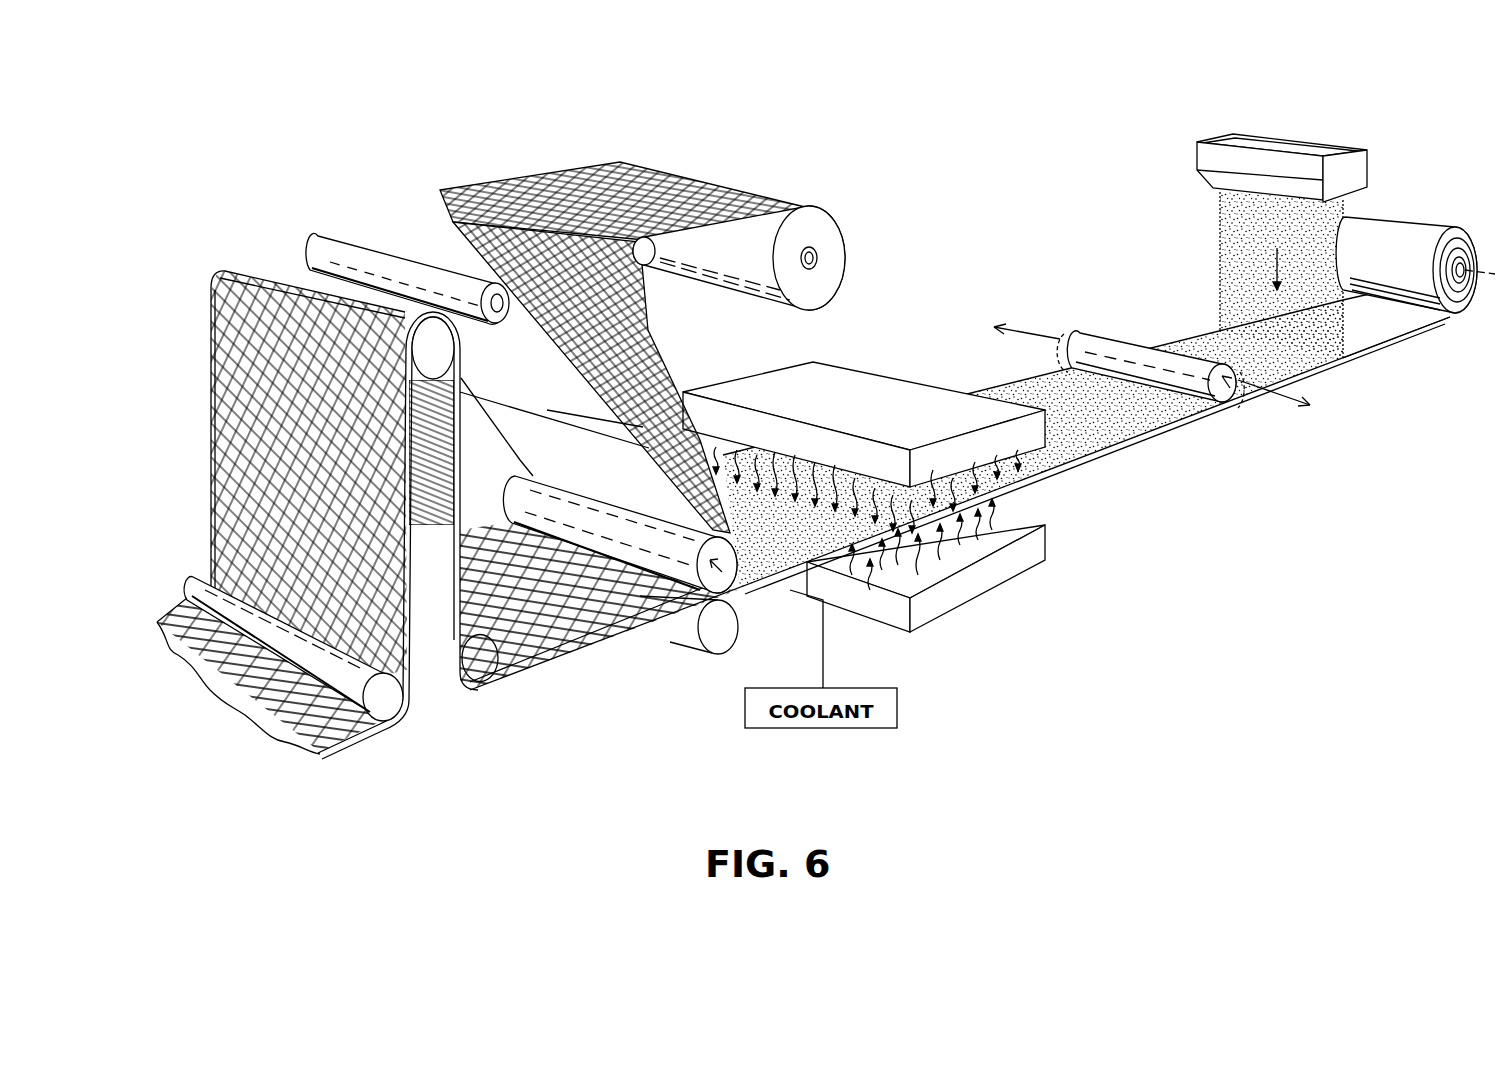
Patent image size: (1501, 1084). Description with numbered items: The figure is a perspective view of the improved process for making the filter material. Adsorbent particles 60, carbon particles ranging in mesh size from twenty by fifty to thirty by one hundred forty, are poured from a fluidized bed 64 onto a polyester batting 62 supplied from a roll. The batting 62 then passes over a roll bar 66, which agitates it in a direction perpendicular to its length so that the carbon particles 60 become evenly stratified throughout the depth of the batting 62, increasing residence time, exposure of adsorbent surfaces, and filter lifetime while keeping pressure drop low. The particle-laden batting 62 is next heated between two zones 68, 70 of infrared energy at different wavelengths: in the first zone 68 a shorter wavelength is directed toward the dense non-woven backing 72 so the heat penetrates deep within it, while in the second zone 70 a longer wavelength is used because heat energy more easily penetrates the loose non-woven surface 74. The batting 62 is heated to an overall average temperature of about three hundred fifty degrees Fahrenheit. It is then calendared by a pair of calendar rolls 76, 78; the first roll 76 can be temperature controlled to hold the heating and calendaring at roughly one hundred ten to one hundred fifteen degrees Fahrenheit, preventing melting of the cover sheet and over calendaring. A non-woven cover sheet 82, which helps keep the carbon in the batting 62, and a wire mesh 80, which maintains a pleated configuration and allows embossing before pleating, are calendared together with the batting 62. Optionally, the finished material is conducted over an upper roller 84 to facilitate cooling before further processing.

The adsorbent particles 60 is at (1214, 243).
The polyester batting 62 is at (1410, 333).
The fluidized bed 64 is at (1360, 164).
The roll bar 66 is at (1133, 353).
The first zone 68 is at (980, 580).
The second zone 70 is at (742, 386).
The dense non-woven backing 72 is at (1004, 484).
The loose non-woven surface 74 is at (803, 476).
The first calendar roll 76 is at (740, 587).
The calendar roll 78 is at (728, 638).
The wire mesh 80 is at (833, 266).
The non-woven cover sheet 82 is at (337, 250).
The upper roller 84 is at (228, 270).